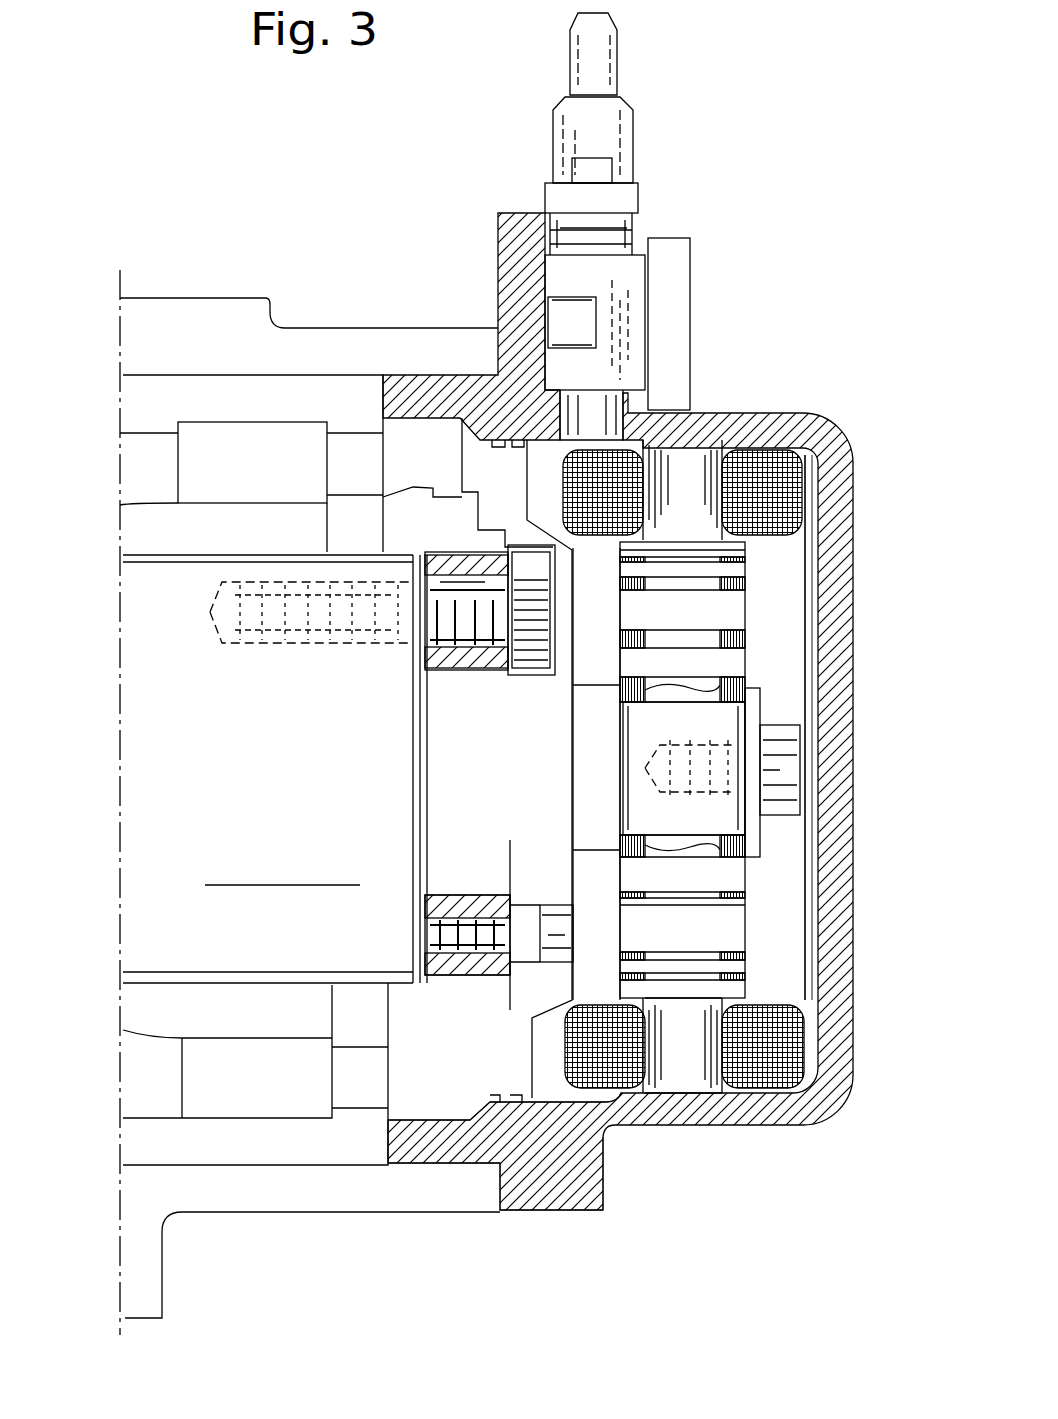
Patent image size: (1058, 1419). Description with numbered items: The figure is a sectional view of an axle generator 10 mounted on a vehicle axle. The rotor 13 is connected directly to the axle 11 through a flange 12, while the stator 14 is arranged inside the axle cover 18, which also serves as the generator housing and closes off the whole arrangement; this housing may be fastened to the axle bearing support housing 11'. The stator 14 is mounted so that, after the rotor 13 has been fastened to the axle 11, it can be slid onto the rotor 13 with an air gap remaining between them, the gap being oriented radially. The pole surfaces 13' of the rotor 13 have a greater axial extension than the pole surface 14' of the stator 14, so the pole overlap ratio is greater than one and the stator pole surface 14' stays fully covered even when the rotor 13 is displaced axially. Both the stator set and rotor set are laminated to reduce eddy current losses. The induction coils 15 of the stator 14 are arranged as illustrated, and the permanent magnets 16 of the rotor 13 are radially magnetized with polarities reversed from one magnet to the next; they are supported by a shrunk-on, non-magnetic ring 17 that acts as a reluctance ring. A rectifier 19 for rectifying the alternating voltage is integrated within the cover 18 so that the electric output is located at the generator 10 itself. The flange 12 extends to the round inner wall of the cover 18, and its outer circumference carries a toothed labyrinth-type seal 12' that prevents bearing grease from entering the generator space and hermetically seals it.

The axle generator 10 is at (857, 260).
The axle 11 is at (251, 769).
The axle bearing support housing 11' is at (320, 808).
The flange 12 is at (504, 1190).
The labyrinth-type seal 12' is at (548, 720).
The rotor 13 is at (749, 774).
The pole surfaces of the rotor 13' is at (791, 677).
The stator 14 is at (639, 347).
The pole surface of the stator 14' is at (719, 711).
The induction coils 15 is at (802, 497).
The permanent magnets 16 is at (727, 572).
The shrunk-on ring 17 is at (793, 1000).
The axle cover 18 is at (843, 1072).
The rectifier 19 is at (640, 230).